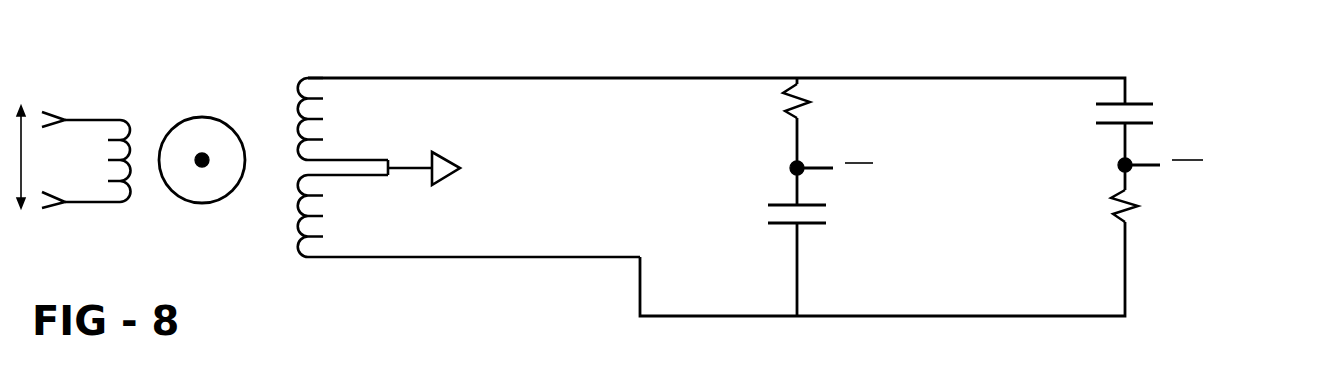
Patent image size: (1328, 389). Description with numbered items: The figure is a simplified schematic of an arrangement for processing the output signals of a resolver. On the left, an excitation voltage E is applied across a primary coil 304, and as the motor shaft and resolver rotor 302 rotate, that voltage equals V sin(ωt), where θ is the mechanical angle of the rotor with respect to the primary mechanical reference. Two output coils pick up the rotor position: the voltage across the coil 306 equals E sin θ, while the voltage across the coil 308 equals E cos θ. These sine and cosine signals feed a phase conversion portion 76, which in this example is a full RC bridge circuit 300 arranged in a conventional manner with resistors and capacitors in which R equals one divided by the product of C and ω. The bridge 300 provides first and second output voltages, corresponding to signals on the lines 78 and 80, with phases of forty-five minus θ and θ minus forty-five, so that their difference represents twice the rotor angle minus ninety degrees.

The phase conversion portion 76 is at (241, 105).
The line 78 is at (790, 167).
The line 80 is at (1118, 165).
The full RC bridge circuit 300 is at (835, 77).
The resolver rotor 302 is at (176, 192).
The primary coil 304 is at (120, 160).
The coil 306 is at (302, 86).
The coil 308 is at (302, 207).